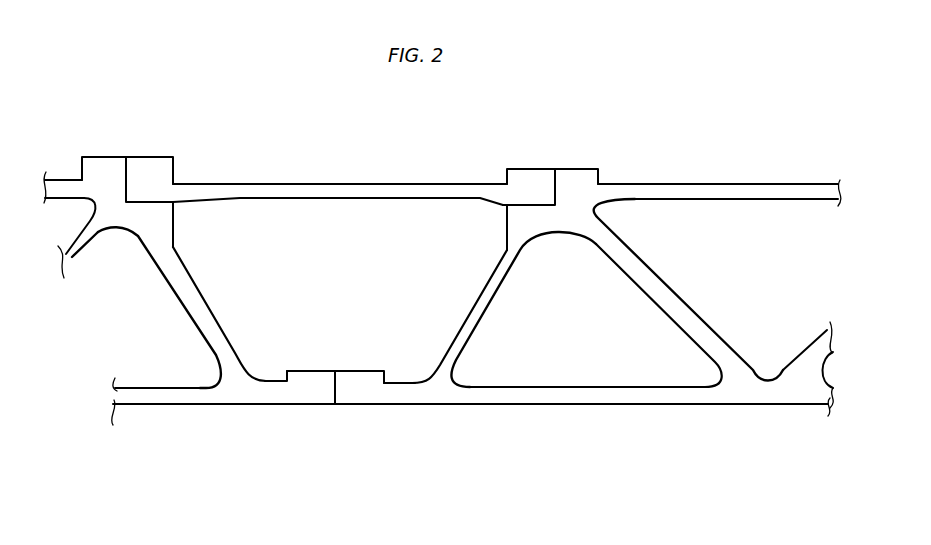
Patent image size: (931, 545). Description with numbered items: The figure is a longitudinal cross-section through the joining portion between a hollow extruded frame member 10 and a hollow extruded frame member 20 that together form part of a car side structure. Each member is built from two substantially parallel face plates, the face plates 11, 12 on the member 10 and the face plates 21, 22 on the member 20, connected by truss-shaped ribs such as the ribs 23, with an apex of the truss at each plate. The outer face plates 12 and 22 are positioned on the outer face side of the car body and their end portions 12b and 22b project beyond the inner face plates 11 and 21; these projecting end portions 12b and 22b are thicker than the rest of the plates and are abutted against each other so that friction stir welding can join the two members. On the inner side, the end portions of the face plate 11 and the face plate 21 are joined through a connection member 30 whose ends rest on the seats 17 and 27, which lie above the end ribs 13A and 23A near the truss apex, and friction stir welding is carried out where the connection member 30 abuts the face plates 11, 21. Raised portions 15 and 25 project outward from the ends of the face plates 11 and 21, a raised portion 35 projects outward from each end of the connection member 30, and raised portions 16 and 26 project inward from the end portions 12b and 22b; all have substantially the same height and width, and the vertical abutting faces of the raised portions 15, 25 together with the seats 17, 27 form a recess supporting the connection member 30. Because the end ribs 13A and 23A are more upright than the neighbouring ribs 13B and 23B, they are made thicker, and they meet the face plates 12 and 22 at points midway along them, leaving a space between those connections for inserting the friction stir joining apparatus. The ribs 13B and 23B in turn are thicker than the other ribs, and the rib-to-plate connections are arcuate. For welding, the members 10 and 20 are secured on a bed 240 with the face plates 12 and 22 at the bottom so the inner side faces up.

The hollow extruded frame member 10 is at (208, 438).
The face plate 11 is at (60, 168).
The face plate 12 is at (162, 404).
The projecting end portion of face plate 12b is at (277, 404).
The rib 13A is at (200, 290).
The rib 13B is at (80, 257).
The raised portion 15 is at (108, 166).
The raised portion 16 is at (310, 372).
The seat 17 is at (174, 232).
The hollow extruded frame member 20 is at (654, 443).
The face plate 21 is at (702, 184).
The face plate 22 is at (582, 405).
The projecting end portion of face plate 22b is at (420, 404).
The truss-shaped ribs 23 is at (823, 345).
The rib 23A is at (478, 298).
The rib 23B is at (642, 292).
The raised portion 25 is at (577, 175).
The raised portion 26 is at (358, 372).
The seat 27 is at (509, 222).
The connection member 30 is at (328, 163).
The raised portion 35 is at (157, 165).
The bed 240 is at (367, 450).